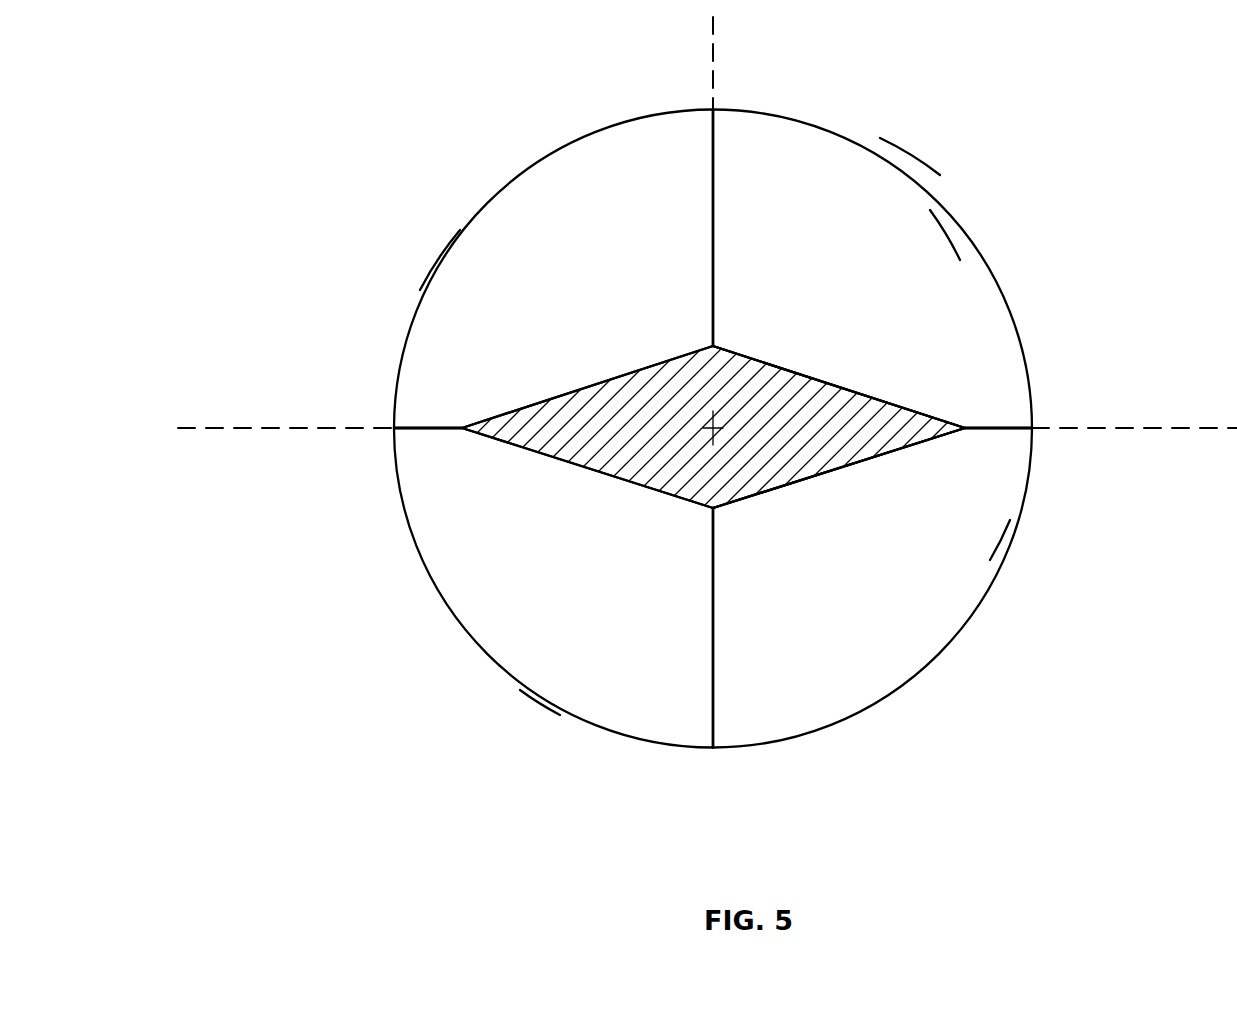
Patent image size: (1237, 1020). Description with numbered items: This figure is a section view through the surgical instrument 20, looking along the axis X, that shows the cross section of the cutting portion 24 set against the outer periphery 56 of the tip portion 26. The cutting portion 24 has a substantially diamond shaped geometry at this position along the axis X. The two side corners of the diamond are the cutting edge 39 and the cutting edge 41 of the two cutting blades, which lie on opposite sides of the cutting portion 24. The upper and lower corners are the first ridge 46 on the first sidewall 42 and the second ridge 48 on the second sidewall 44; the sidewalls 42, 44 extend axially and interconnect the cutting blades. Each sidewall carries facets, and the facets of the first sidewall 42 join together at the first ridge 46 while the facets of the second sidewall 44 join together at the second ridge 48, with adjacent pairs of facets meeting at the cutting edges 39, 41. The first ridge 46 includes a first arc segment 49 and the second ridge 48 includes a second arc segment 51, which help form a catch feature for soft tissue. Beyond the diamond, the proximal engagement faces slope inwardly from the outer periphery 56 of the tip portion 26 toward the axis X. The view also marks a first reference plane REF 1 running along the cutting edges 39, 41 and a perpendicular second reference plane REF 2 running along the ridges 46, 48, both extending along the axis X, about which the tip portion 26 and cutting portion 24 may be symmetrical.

The surgical instrument 20 is at (222, 75).
The cutting portion 24 is at (860, 472).
The tip portion 26 is at (858, 133).
The cutting edge 39 is at (1000, 428).
The cutting edge 41 is at (425, 428).
The first sidewall 42 is at (840, 386).
The second sidewall 44 is at (757, 497).
The first ridge 46 is at (715, 178).
The second ridge 48 is at (715, 690).
The first arc segment 49 is at (772, 228).
The second arc segment 51 is at (776, 628).
The outer periphery 56 is at (920, 182).
The axis X is at (708, 436).
The first reference plane REF 1 is at (1140, 428).
The second reference plane REF 2 is at (711, 80).